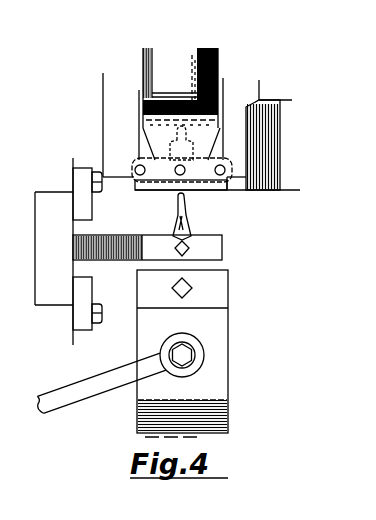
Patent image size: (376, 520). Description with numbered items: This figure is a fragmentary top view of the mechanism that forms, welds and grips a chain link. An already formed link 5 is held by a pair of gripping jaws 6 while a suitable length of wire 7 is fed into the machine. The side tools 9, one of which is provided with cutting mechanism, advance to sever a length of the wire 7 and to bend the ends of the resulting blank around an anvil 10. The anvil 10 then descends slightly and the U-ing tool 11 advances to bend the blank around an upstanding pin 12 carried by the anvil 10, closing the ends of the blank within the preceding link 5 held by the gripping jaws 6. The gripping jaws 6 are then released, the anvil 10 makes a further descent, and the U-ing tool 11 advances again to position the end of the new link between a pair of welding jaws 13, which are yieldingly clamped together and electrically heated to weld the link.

The link 5 is at (188, 218).
The gripping jaws 6 is at (117, 235).
The wire 7 is at (140, 176).
The side tools 9 is at (109, 132).
The anvil 10 is at (212, 183).
The U-ing tool 11 is at (217, 51).
The upstanding pin 12 is at (178, 176).
The welding jaws 13 is at (223, 293).